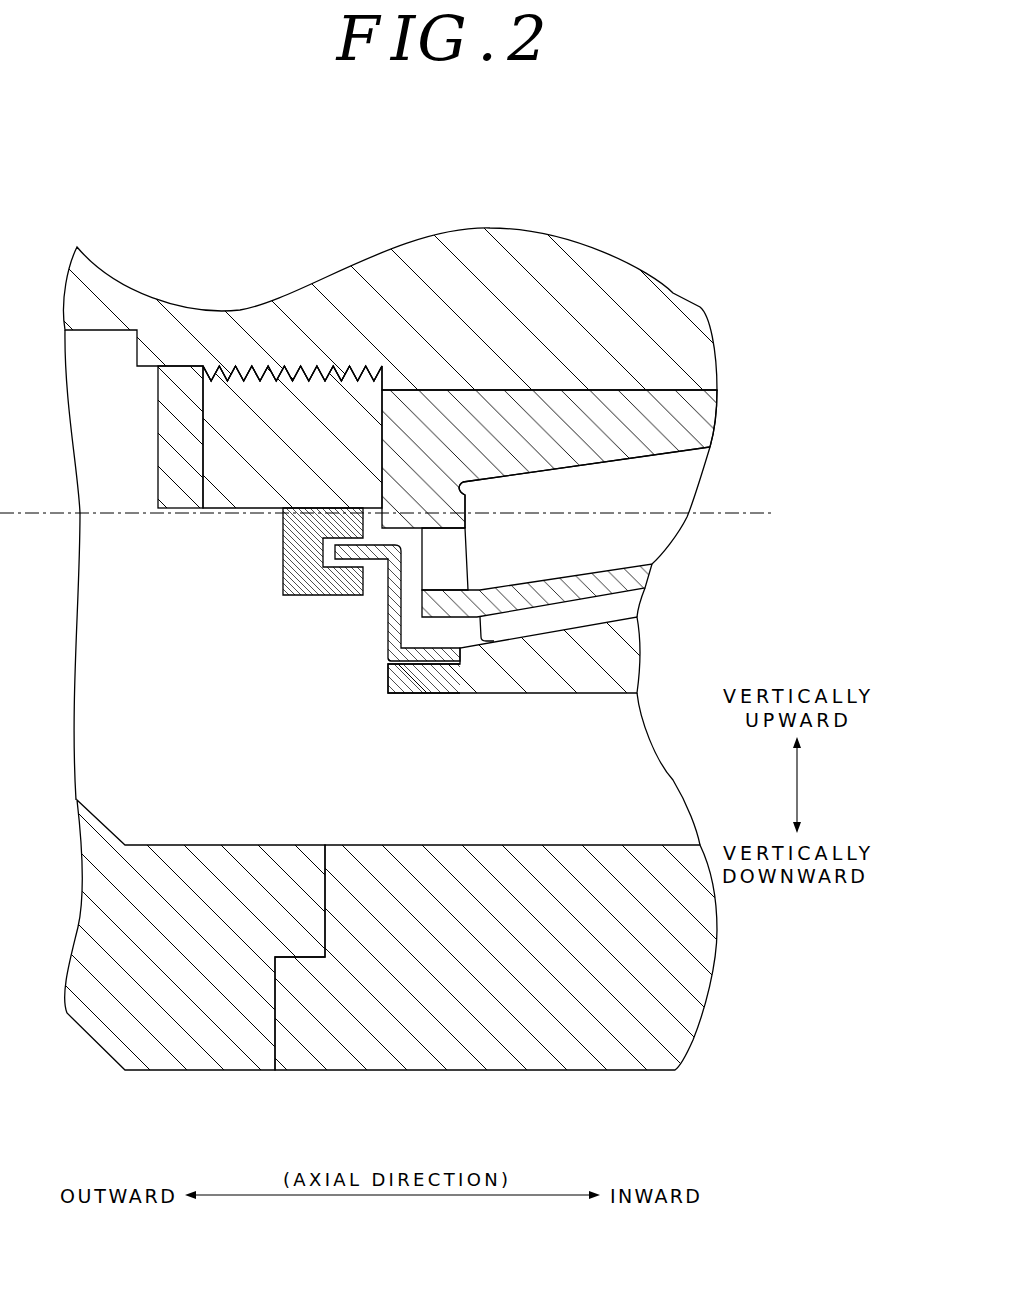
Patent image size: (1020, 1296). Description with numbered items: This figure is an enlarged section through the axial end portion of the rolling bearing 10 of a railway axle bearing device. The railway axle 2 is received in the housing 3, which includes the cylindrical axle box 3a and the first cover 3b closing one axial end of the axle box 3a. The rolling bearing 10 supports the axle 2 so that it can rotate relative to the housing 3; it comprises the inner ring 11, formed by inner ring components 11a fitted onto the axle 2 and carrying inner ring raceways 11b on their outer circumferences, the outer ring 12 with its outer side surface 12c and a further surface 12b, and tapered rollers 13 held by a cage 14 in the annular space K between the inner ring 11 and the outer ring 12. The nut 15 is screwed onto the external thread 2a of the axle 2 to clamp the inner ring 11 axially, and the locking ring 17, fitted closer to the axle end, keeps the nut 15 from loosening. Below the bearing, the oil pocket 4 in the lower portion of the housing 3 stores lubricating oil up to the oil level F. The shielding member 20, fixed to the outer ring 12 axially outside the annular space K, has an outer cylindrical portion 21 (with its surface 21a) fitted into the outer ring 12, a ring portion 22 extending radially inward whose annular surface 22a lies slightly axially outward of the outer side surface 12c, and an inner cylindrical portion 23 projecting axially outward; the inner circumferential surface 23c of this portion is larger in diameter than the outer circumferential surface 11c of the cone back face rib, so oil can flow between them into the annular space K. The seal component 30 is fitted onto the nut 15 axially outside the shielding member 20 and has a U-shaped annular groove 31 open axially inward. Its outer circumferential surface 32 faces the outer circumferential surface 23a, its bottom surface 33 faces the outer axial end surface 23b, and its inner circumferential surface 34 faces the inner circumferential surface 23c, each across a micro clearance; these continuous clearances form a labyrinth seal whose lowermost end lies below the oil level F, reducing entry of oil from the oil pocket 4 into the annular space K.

The railway axle 2 is at (500, 262).
The external thread 2a is at (308, 363).
The housing 3 is at (391, 983).
The axle box 3a is at (572, 1040).
The first cover 3b is at (93, 1020).
The oil pocket 4 is at (153, 792).
The rolling bearing 10 is at (523, 720).
The inner ring 11 is at (627, 432).
The inner ring component 11a is at (712, 405).
The inner ring raceway 11b is at (592, 467).
The outer circumferential surface of cone back face rib 11c is at (466, 515).
The outer ring 12 is at (518, 697).
The flange surface 12b is at (573, 613).
The outer side surface of outer ring 12c is at (388, 664).
The tapered roller 13 is at (695, 463).
The cage 14 is at (652, 572).
The nut 15 is at (200, 470).
The locking ring 17 is at (158, 400).
The shielding member 20 is at (388, 662).
The outer cylindrical portion 21 is at (418, 650).
The cylindrical portion end face 21a is at (446, 664).
The ring portion 22 is at (388, 625).
The annular surface 22a is at (388, 657).
The inner cylindrical portion 23 is at (337, 577).
The outer circumferential surface of inner cylindrical portion 23a is at (343, 572).
The outer axial end surface of inner cylindrical portion 23b is at (318, 530).
The inner circumferential surface of inner cylindrical portion 23c is at (390, 530).
The seal component 30 is at (326, 593).
The annular groove 31 is at (405, 567).
The outer circumferential surface of annular groove 32 is at (345, 520).
The bottom surface of annular groove 33 is at (337, 562).
The inner circumferential surface of annular groove 34 is at (348, 507).
The oil level F is at (32, 504).
The annular space K is at (436, 521).